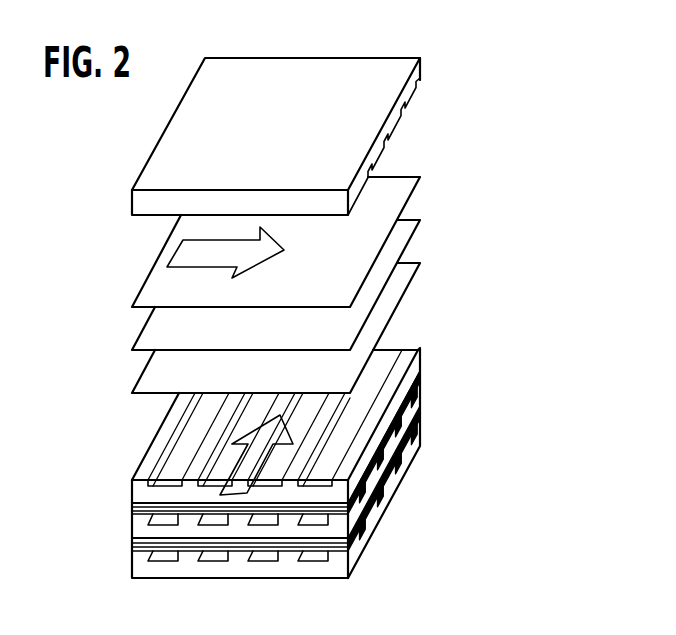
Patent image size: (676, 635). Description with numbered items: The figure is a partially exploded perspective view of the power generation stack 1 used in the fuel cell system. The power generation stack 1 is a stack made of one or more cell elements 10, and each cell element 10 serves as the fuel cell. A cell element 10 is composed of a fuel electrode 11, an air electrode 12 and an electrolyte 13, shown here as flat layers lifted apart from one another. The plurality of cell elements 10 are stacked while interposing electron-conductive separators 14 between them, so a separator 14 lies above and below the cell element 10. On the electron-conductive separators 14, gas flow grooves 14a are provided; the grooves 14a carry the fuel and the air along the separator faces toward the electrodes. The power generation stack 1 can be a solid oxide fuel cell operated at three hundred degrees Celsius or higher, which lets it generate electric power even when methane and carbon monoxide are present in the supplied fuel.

The power generation stack 1 is at (500, 61).
The cell element 10 is at (517, 189).
The fuel electrode 11 is at (368, 221).
The air electrode 12 is at (381, 317).
The electrolyte 13 is at (380, 277).
The electron-conductive separator 14 is at (235, 72).
The gas flow groove 14a is at (410, 100).